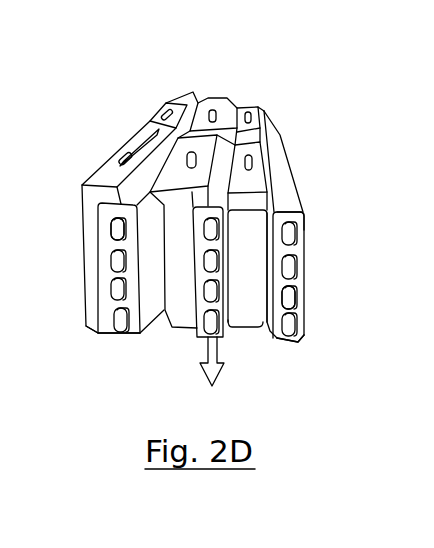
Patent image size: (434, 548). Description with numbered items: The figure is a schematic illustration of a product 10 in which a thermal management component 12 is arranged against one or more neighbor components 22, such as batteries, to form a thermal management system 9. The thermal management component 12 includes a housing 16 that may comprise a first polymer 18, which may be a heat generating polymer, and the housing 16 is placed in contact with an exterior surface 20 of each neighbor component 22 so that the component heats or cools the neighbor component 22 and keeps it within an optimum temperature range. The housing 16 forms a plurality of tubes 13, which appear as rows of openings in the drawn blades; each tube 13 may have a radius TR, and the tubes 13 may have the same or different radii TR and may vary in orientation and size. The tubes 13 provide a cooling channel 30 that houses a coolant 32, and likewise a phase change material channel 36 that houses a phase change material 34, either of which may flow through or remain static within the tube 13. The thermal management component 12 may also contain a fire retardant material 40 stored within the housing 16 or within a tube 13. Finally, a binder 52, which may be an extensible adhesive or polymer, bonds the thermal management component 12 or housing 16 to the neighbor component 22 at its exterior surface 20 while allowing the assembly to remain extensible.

The system 9 is at (262, 76).
The product 10 is at (322, 125).
The thermal management component 12 is at (302, 206).
The tube 13 is at (121, 264).
The housing 16 is at (304, 212).
The first polymer 18 is at (193, 92).
The exterior surface 20 is at (135, 160).
The neighbor component 22 is at (121, 163).
The cooling channel 30 is at (212, 327).
The coolant 32 is at (294, 338).
The phase change material 34 is at (288, 300).
The phase change material channel 36 is at (116, 235).
The fire retardant material 40 is at (225, 337).
The binder 52 is at (264, 111).
The radius TR is at (115, 327).